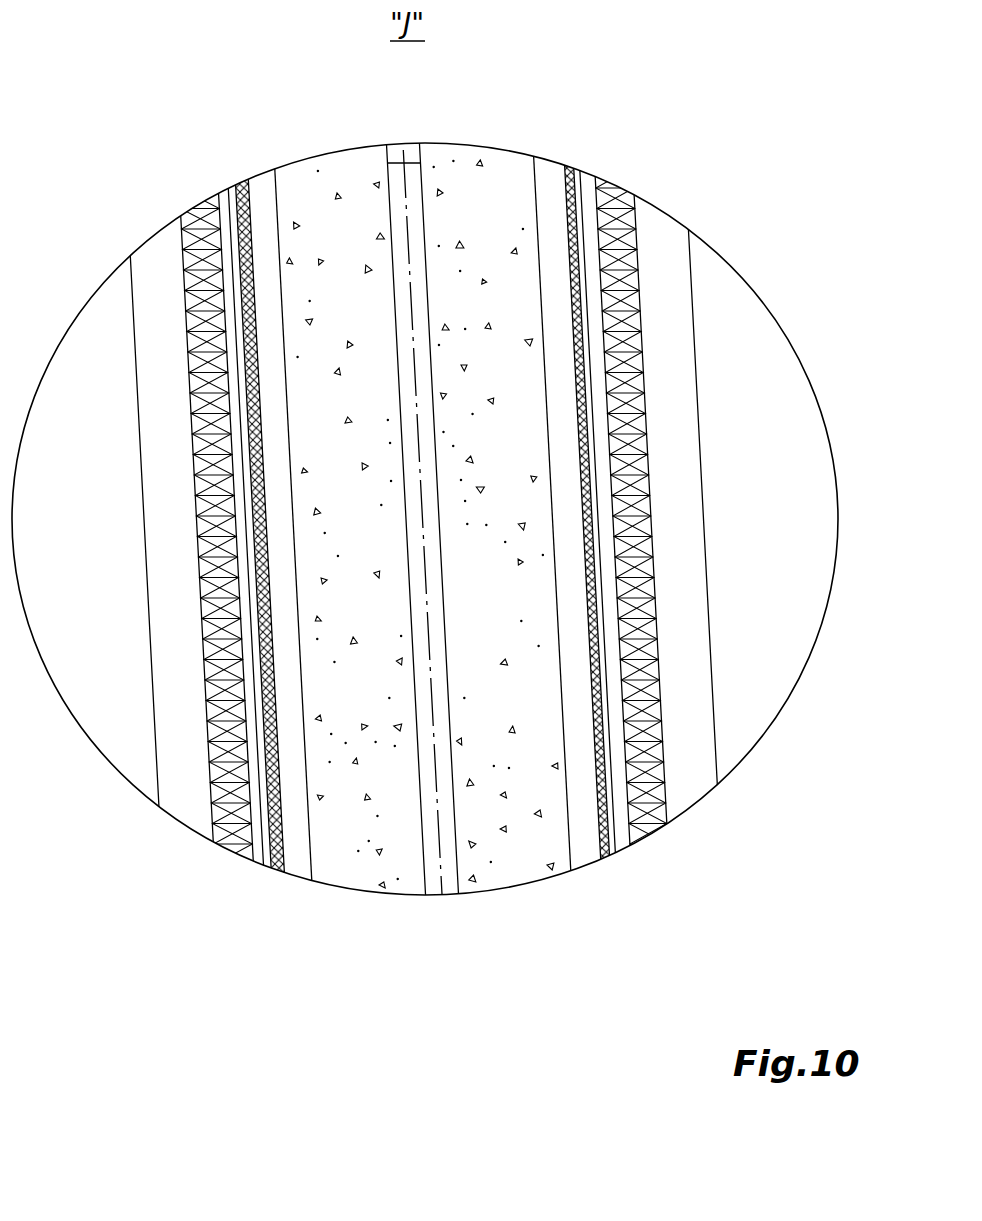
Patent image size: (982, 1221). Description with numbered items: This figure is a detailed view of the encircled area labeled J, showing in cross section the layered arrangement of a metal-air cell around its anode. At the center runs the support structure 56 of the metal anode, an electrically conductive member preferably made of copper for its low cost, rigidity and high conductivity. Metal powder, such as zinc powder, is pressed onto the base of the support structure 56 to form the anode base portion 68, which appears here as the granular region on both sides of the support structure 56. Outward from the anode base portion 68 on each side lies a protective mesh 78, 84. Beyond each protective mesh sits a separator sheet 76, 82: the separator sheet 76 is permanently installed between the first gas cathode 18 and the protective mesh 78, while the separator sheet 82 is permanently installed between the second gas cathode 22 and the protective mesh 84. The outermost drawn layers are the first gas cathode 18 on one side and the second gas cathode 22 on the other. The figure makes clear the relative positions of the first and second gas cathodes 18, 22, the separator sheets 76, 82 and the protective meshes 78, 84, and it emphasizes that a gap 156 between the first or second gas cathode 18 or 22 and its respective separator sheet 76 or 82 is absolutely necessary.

The first gas cathode 18 is at (213, 712).
The second gas cathode 22 is at (645, 692).
The gap 156 is at (257, 782).
The separator sheet 76 is at (272, 835).
The protective mesh 78 is at (282, 855).
The anode base portion 68 is at (353, 843).
The support structure 56 is at (433, 825).
The protective mesh 84 is at (592, 857).
The separator sheet 82 is at (615, 823).